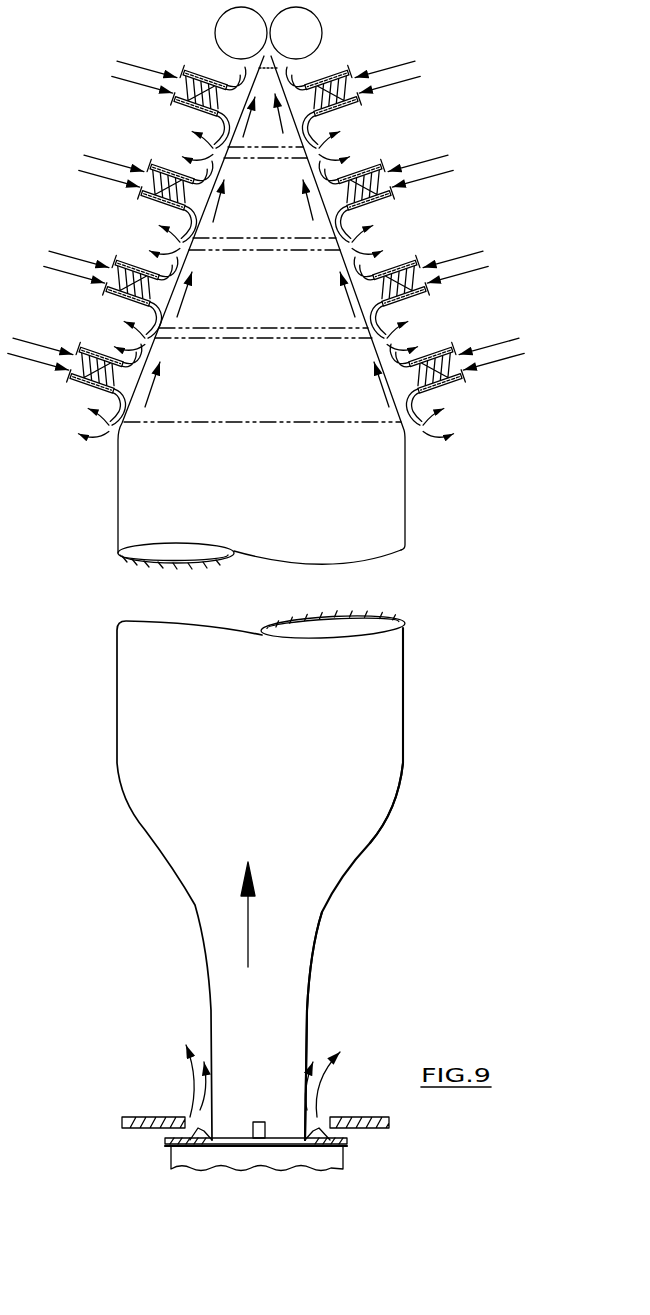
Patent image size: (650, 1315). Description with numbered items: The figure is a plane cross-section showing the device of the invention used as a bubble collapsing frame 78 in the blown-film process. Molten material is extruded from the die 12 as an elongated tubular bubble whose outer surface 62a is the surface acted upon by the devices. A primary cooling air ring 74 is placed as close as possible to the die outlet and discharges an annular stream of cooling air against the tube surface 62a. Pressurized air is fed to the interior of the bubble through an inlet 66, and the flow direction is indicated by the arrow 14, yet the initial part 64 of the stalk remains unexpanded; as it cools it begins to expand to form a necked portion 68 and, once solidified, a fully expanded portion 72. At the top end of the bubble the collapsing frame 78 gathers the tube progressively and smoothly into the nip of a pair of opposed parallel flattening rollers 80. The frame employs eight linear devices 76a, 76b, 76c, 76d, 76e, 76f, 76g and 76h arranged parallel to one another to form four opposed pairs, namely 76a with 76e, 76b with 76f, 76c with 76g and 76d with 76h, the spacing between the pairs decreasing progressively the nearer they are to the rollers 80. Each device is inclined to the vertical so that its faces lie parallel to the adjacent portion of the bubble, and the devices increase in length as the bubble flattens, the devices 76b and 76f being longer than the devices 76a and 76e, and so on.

The flattening rollers 80 is at (238, 35).
The collapsing frame 78 is at (482, 207).
The linear device 76a is at (107, 402).
The linear device 76b is at (125, 306).
The linear device 76c is at (157, 213).
The linear device 76d is at (185, 122).
The linear device 76e is at (447, 407).
The linear device 76f is at (428, 302).
The linear device 76g is at (390, 212).
The linear device 76h is at (354, 118).
The fully expanded portion 72 is at (394, 703).
The necked portion 68 is at (272, 774).
The outer surface 62a is at (387, 817).
The initial part 64 is at (297, 950).
The flow direction 14 is at (250, 913).
The inlet 66 is at (266, 1128).
The primary cooling air ring 74 is at (374, 1117).
The die 12 is at (338, 1157).